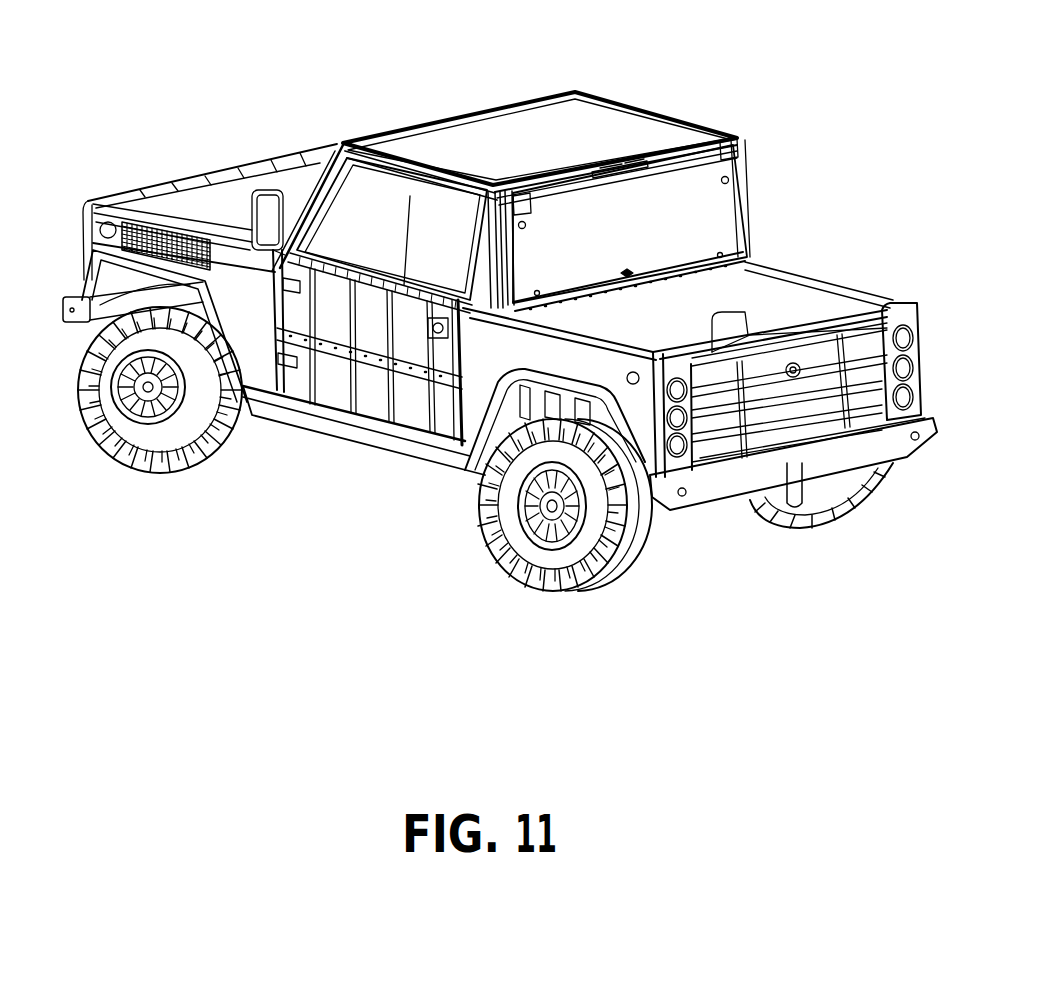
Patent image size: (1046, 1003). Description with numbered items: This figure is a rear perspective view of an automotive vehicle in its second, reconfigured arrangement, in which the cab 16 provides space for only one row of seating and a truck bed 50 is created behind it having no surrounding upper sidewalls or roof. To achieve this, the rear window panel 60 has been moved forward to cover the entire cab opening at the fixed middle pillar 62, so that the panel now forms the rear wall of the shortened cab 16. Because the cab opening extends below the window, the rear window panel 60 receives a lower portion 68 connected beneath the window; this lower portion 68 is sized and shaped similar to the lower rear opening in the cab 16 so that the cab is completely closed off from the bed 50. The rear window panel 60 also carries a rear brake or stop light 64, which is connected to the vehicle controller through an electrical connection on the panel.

The cab 16 is at (535, 132).
The rear brake or stop light 64 is at (640, 132).
The rear window panel 60 is at (722, 213).
The lower portion 68 is at (700, 337).
The middle pillars 62 is at (487, 305).
The truck bed 50 is at (722, 272).